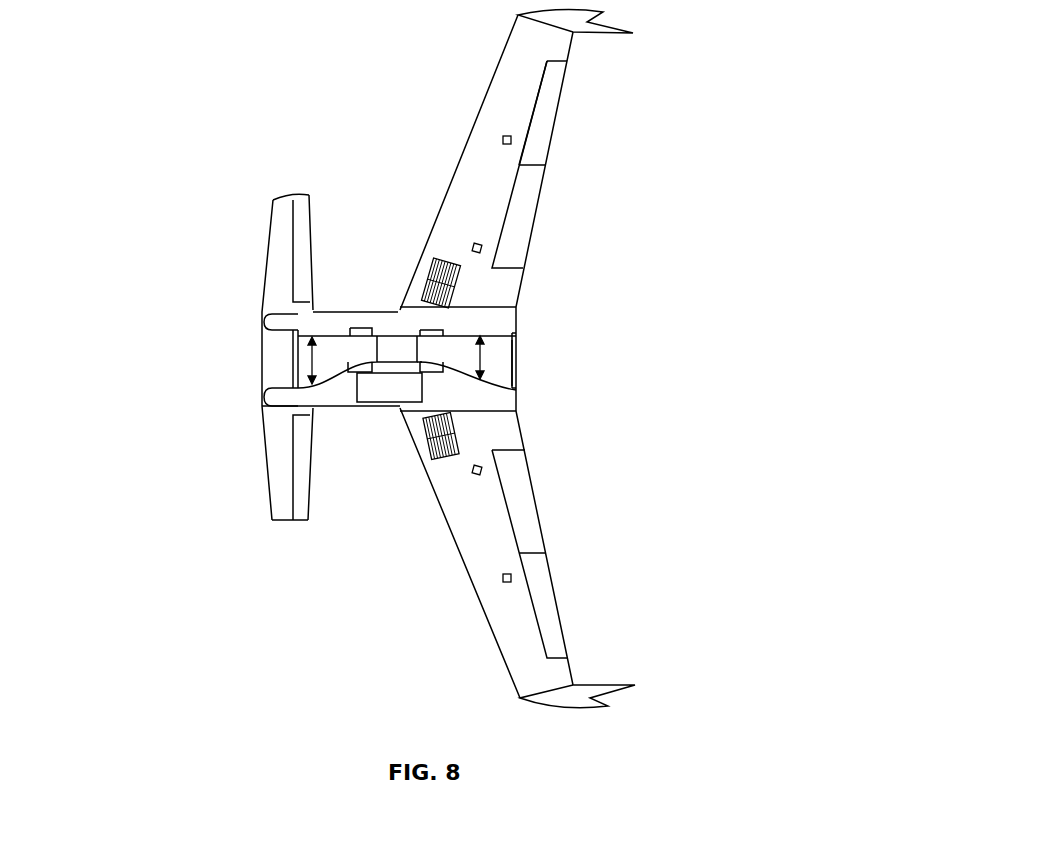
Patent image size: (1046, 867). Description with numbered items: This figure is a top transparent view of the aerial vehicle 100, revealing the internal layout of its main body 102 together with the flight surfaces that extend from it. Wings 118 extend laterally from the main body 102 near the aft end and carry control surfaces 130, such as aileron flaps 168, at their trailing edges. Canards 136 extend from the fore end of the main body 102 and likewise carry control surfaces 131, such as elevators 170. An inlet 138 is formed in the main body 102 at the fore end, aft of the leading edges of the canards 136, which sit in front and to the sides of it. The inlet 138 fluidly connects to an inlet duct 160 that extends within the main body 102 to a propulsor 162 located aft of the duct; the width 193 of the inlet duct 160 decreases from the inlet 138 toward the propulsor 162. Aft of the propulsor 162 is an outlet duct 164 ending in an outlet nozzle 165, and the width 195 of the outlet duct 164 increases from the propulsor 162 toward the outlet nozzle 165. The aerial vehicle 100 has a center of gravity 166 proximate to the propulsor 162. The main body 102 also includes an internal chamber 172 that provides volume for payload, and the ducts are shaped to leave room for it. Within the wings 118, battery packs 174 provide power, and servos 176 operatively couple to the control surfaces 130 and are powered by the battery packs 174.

The aerial vehicle 100 is at (203, 145).
The main body 102 is at (340, 408).
The wings 118 is at (480, 107).
The control surfaces 130 is at (562, 80).
The control surfaces 131 is at (309, 202).
The canards 136 is at (275, 210).
The inlet 138 is at (293, 371).
The inlet duct 160 is at (330, 358).
The propulsor 162 is at (413, 348).
The outlet duct 164 is at (507, 362).
The outlet nozzle 165 is at (518, 348).
The center of gravity 166 is at (420, 365).
The aileron flaps 168 is at (555, 117).
The elevators 170 is at (313, 243).
The internal chamber 172 is at (372, 408).
The battery packs 174 is at (457, 285).
The servos 176 is at (503, 140).
The width of the inlet duct 193 is at (310, 358).
The width of the outlet duct 195 is at (482, 350).